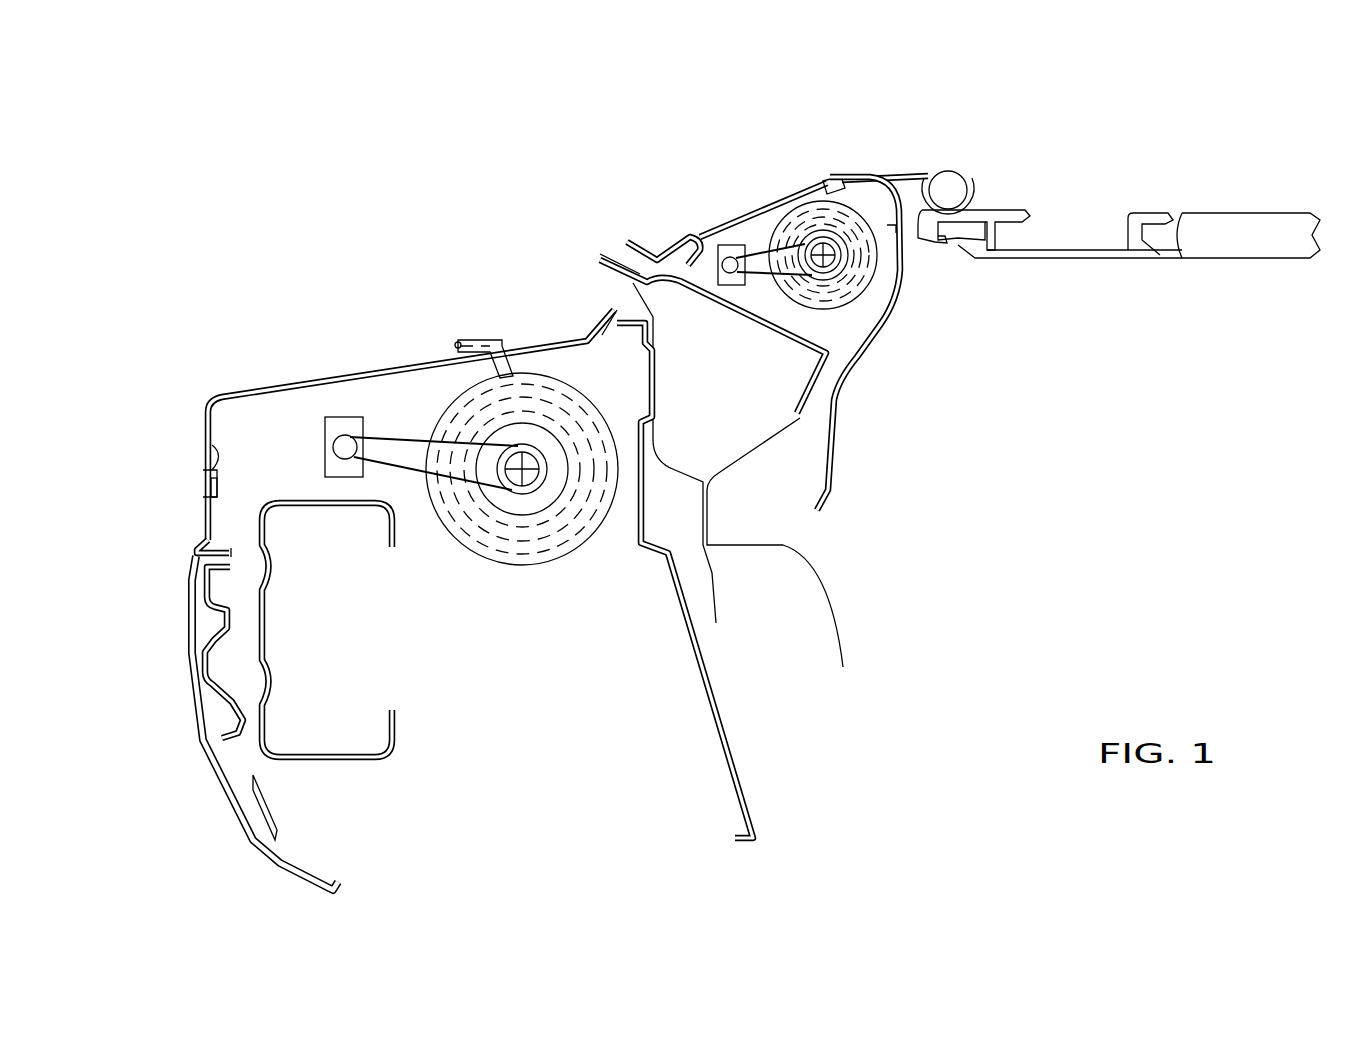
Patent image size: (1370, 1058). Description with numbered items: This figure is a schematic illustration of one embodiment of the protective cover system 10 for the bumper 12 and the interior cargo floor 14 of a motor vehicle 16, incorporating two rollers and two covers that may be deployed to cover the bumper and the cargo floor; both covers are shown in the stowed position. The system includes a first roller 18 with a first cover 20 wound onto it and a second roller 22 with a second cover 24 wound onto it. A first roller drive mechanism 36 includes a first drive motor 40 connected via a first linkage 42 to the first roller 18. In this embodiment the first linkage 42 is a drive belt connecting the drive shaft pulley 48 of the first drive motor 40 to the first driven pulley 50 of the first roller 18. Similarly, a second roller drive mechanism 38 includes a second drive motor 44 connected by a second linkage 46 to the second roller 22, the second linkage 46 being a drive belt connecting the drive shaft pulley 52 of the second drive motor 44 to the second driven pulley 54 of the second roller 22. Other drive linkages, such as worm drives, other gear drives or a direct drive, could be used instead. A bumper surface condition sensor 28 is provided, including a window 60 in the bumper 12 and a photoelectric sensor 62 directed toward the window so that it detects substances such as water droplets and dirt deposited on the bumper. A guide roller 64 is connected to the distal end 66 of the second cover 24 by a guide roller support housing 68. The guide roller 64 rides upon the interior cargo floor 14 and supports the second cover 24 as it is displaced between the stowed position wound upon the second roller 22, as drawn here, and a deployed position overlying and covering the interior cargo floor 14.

The protective cover system 10 is at (477, 220).
The bumper 12 is at (206, 516).
The interior cargo floor 14 is at (1245, 213).
The motor vehicle 16 is at (875, 397).
The first roller 18 is at (545, 430).
The first cover 20 is at (470, 407).
The second roller 22 is at (815, 233).
The second cover 24 is at (885, 178).
The bumper surface condition sensor 28 is at (194, 484).
The first roller drive mechanism 36 is at (302, 448).
The second roller drive mechanism 38 is at (692, 230).
The first drive motor 40 is at (325, 423).
The first linkage 42 is at (408, 477).
The second drive motor 44 is at (733, 286).
The second linkage 46 is at (760, 284).
The drive shaft pulley 48 is at (335, 455).
The first driven pulley 50 is at (535, 490).
The drive shaft pulley 52 is at (730, 272).
The second driven pulley 54 is at (838, 268).
The window 60 is at (212, 483).
The photoelectric sensor 62 is at (212, 467).
The guide roller 64 is at (955, 192).
The distal end 66 is at (928, 168).
The guide roller support housing 68 is at (960, 165).